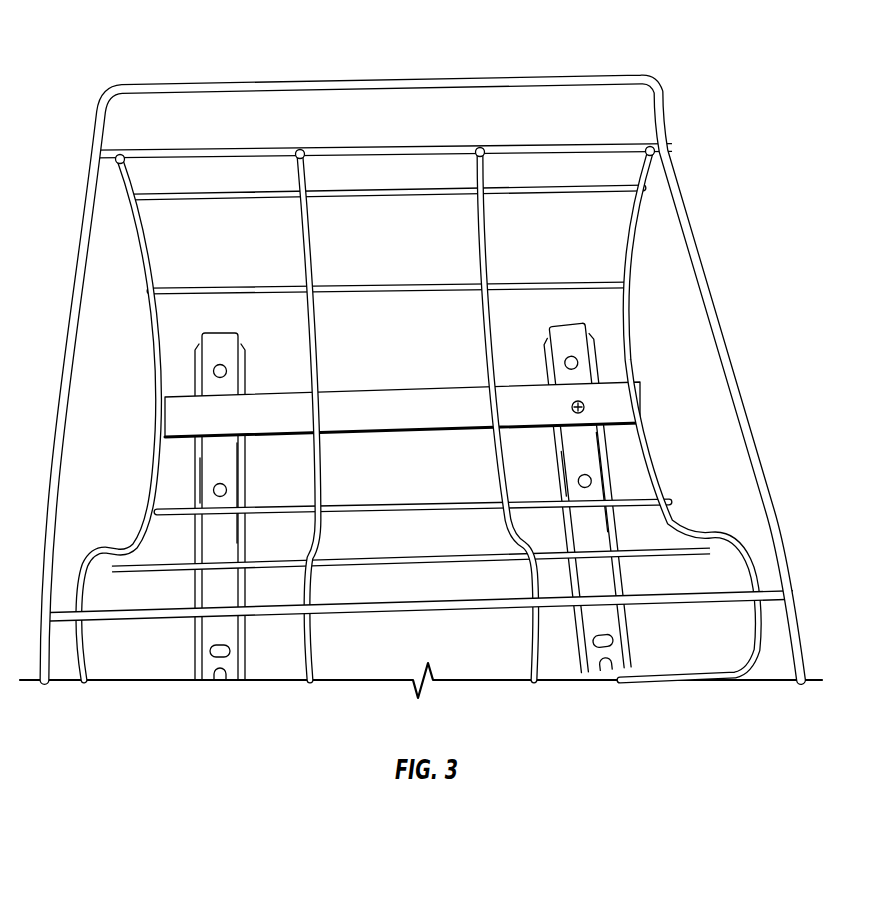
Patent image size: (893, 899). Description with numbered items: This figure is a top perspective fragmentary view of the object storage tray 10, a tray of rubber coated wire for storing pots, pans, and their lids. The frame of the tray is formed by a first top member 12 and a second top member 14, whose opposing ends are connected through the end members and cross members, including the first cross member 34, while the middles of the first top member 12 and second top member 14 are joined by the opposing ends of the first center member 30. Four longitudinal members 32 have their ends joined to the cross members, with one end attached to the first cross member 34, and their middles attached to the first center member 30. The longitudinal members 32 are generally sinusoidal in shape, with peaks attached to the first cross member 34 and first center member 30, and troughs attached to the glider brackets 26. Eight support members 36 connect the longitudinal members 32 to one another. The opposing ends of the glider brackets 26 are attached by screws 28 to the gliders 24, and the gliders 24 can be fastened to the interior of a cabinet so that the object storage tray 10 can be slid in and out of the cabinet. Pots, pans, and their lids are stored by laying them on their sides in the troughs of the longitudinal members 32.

The object storage tray 10 is at (133, 42).
The first top member 12 is at (703, 265).
The second top member 14 is at (505, 78).
The glider 24 is at (593, 460).
The glider bracket 26 is at (620, 402).
The screw 28 is at (585, 401).
The first center member 30 is at (705, 595).
The longitudinal member 32 is at (312, 243).
The first cross member 34 is at (532, 145).
The support member 36 is at (510, 193).